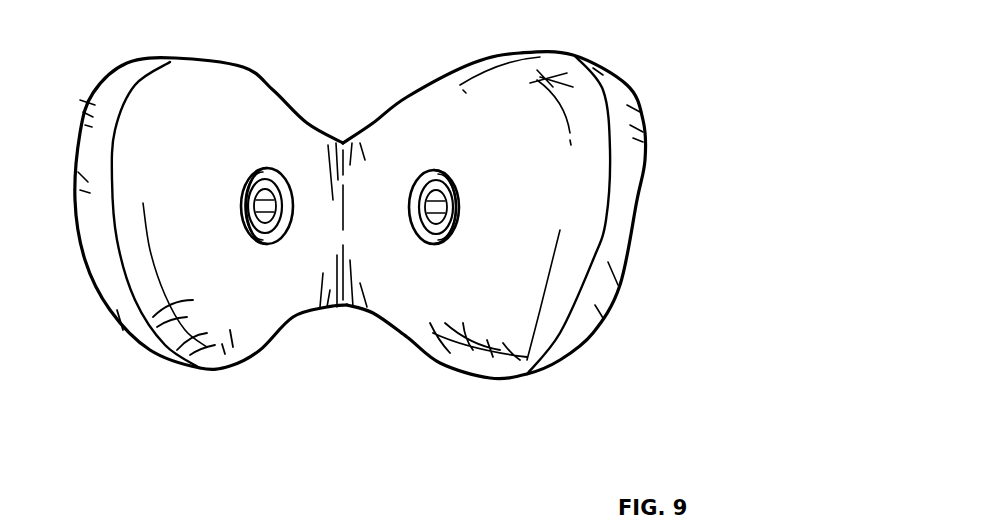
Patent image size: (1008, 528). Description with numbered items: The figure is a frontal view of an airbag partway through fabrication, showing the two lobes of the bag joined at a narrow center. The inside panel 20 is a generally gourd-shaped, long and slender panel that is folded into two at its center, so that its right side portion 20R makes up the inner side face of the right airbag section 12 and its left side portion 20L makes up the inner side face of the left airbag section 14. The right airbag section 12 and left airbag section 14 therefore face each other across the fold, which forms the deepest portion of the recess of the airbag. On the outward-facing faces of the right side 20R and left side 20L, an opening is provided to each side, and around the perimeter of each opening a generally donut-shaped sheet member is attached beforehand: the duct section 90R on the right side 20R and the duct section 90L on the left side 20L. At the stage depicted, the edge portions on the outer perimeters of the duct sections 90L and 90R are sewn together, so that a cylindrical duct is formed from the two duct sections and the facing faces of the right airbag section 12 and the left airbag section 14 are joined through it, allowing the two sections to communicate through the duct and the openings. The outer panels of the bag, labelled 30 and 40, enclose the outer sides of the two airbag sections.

The right airbag section 12 is at (650, 268).
The left airbag section 14 is at (221, 390).
The inside panel 20 is at (397, 122).
The left side portion 20L is at (232, 72).
The right side portion 20R is at (457, 120).
The right outer panel 30 is at (643, 110).
The left outer panel 40 is at (93, 263).
The duct section 90L is at (247, 172).
The duct section 90R is at (443, 167).